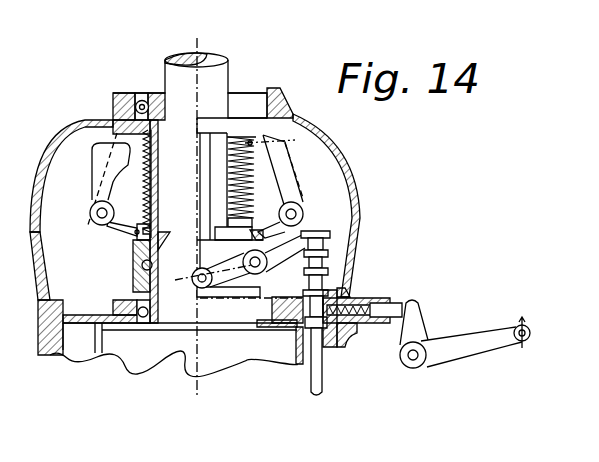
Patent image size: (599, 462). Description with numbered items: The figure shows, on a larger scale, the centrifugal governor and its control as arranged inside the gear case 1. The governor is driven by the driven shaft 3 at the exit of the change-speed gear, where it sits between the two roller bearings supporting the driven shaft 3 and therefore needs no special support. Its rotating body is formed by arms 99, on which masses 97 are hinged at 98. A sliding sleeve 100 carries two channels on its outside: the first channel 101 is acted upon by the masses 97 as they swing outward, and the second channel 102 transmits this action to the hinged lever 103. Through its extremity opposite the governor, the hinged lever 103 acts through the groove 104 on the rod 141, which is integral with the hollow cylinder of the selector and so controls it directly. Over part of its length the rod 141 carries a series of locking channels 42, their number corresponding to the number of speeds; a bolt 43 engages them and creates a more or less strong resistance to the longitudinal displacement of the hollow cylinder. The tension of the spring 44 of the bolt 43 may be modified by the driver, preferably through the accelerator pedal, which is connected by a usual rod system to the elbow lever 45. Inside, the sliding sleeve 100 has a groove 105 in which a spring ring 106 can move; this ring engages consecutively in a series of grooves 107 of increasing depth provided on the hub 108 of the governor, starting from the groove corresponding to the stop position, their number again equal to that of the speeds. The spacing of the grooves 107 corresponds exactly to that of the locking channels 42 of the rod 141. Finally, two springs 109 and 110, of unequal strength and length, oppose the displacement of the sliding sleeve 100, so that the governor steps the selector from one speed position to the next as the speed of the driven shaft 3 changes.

The gear case 1 is at (360, 192).
The driven shaft 3 is at (167, 105).
The locking channels 42 is at (293, 330).
The bolt 43 is at (348, 297).
The spring 44 is at (357, 333).
The elbow lever 45 is at (447, 342).
The masses 97 is at (94, 165).
The hinge 98 is at (90, 215).
The arms 99 is at (93, 118).
The sliding sleeve 100 is at (140, 262).
The channel 101 is at (138, 237).
The channel 102 is at (137, 284).
The hinged lever 103 is at (283, 262).
The groove 104 is at (330, 244).
The groove 105 is at (157, 282).
The spring ring 106 is at (153, 265).
The grooves 107 is at (160, 247).
The hub 108 is at (155, 194).
The spring 109 is at (150, 161).
The spring 110 is at (134, 234).
The rod 141 is at (323, 384).